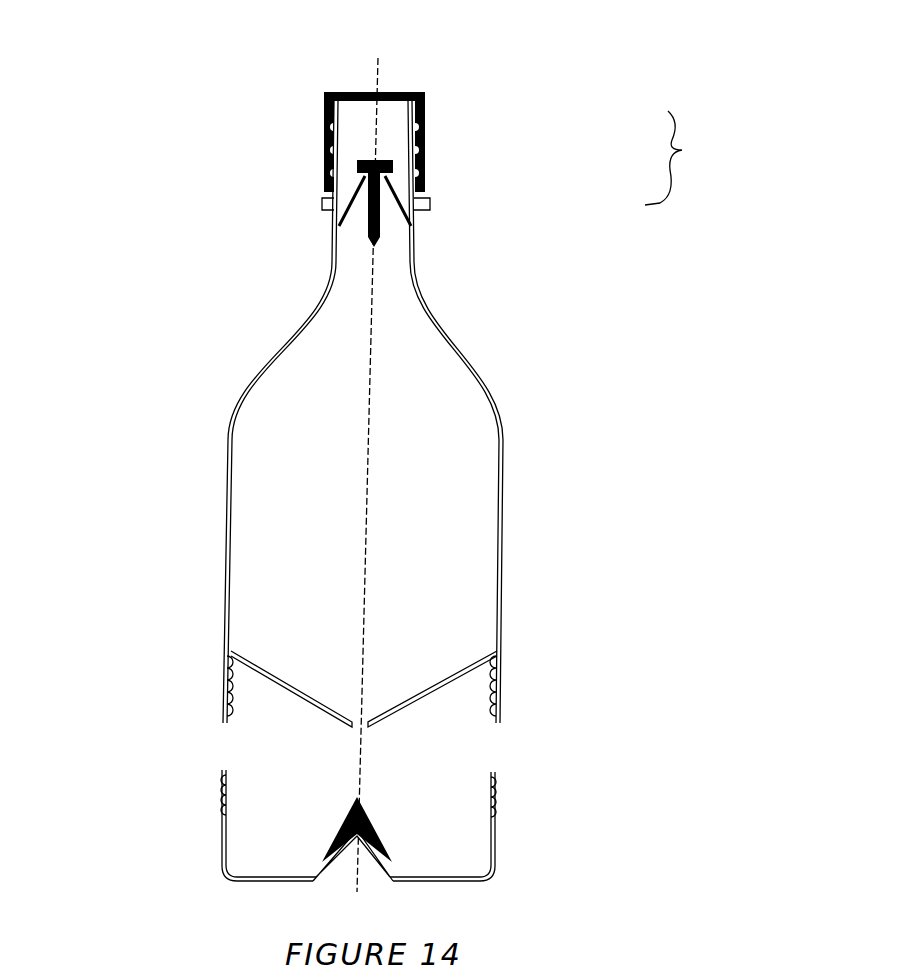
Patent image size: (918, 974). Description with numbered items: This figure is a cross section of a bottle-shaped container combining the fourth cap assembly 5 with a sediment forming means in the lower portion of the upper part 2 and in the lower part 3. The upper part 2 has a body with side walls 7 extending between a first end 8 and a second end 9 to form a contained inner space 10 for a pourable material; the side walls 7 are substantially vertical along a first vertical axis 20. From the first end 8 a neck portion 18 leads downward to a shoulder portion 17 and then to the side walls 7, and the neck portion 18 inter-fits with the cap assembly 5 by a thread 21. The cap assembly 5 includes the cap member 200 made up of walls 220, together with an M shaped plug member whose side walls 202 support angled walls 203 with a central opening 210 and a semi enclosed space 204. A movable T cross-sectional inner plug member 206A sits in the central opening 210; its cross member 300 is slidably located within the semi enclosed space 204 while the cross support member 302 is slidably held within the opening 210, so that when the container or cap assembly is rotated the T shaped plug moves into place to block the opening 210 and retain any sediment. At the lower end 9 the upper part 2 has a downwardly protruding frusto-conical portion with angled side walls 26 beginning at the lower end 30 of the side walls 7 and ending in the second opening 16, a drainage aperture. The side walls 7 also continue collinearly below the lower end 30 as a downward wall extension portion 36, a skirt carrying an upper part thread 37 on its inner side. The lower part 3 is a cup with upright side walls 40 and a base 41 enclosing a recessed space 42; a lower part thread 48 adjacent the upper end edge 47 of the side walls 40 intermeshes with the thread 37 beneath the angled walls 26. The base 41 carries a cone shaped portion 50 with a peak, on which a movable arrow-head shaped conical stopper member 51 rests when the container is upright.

The cap assembly 5 is at (133, 154).
The cap member 200 is at (290, 117).
The thread 21 is at (360, 137).
The semi enclosed space 204 is at (427, 98).
The walls 220 is at (427, 137).
The side walls 202 is at (322, 155).
The cross member 300 is at (427, 163).
The cross support member 302 is at (412, 197).
The inner plug member 206A is at (704, 158).
The central opening 210 is at (322, 182).
The angled walls 203 is at (320, 197).
The neck portion 18 is at (320, 217).
The first end 8 is at (270, 275).
The shoulder portion 17 is at (420, 292).
The first vertical axis 20 is at (366, 462).
The inner space 10 is at (391, 500).
The upper part 2 is at (590, 465).
The side walls 7 is at (226, 572).
The lower end 30 is at (497, 652).
The second opening 16 is at (350, 718).
The angled side walls 26 is at (446, 681).
The second end 9 is at (197, 682).
The downward wall extension portion 36 is at (224, 702).
The upper part thread 37 is at (490, 697).
The upper end edge 47 is at (494, 772).
The lower part thread 48 is at (495, 790).
The recessed space 42 is at (269, 825).
The conical stopper member 51 is at (370, 823).
The lower part 3 is at (572, 803).
The lower part upright side walls 40 is at (496, 860).
The base 41 is at (255, 883).
The cone shaped portion 50 is at (335, 860).